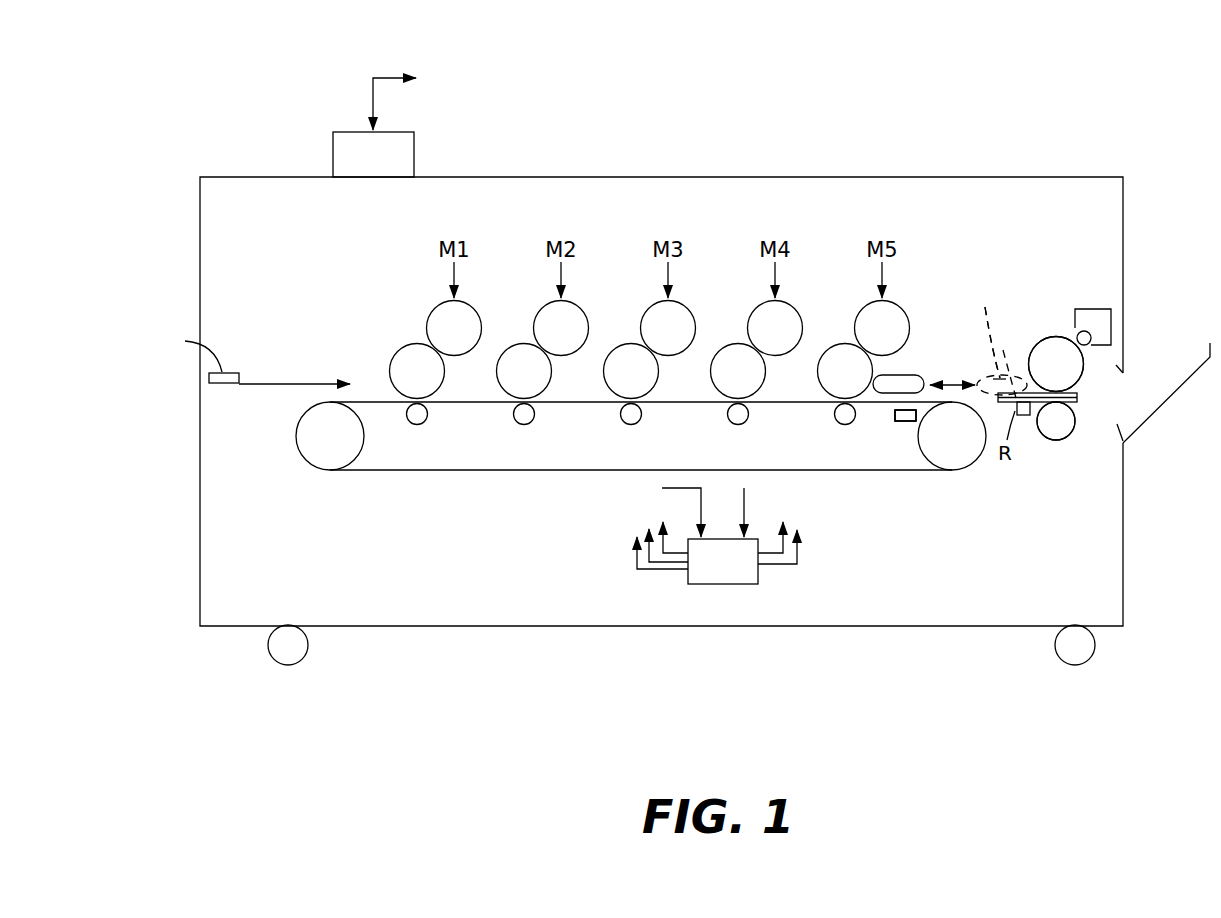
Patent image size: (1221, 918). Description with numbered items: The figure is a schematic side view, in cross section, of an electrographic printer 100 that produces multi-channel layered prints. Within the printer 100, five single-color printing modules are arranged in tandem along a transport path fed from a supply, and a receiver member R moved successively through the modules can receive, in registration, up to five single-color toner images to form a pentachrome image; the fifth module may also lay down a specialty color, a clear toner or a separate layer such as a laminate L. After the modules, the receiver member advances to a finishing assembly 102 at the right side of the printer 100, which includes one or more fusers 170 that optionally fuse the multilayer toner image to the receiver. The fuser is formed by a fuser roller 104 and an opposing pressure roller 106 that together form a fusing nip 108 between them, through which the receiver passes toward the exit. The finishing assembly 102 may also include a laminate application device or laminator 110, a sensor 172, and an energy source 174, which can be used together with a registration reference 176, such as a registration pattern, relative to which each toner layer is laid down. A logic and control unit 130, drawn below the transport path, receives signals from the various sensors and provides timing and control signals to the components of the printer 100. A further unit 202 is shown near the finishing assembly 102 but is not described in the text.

The electrographic printer 100 is at (1002, 116).
The finishing assembly 102 is at (1000, 258).
The fuser roller 104 is at (1055, 336).
The pressure roller 106 is at (1055, 443).
The fusing nip 108 is at (1092, 398).
The laminate application device 110 is at (910, 374).
The logic and control unit 130 is at (722, 584).
The fuser 170 is at (1057, 255).
The sensor 172 is at (905, 422).
The energy source 174 is at (910, 432).
The registration reference 176 is at (895, 407).
The processing unit 202 is at (1091, 308).